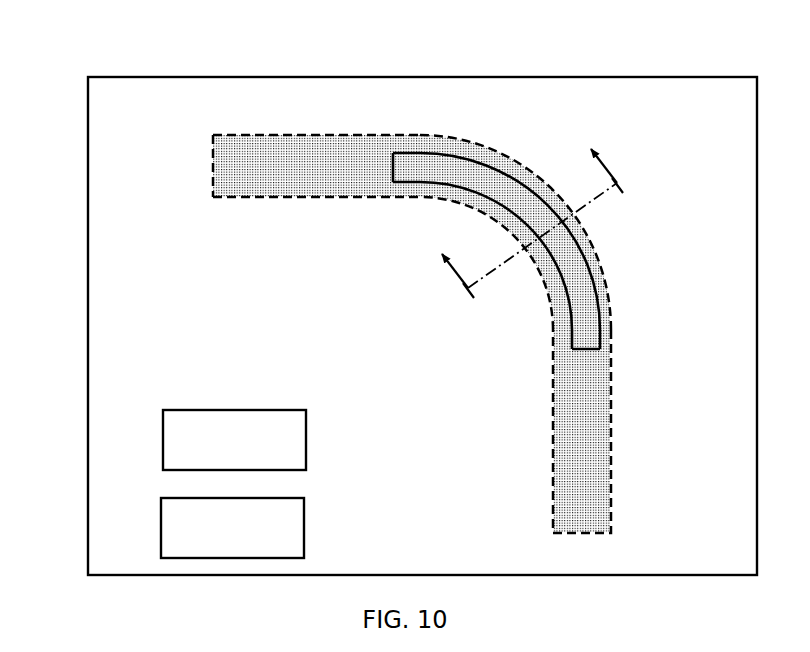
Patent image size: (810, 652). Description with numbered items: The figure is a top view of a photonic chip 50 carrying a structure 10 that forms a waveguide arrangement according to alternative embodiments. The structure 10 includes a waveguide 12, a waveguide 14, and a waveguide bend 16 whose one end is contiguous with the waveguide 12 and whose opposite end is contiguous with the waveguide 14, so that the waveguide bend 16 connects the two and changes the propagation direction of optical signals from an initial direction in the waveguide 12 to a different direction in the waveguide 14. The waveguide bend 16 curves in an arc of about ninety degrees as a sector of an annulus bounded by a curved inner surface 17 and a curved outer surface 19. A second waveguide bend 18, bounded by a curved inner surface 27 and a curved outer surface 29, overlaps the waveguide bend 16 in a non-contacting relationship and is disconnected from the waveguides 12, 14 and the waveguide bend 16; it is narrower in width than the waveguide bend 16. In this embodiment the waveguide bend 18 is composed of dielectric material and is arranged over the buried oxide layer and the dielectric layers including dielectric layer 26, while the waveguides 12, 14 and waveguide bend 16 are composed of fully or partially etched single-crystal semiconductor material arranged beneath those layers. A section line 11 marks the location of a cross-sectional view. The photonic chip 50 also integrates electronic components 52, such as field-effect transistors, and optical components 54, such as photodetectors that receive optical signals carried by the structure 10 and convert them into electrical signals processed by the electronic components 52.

The photonic chip 50 is at (85, 52).
The dielectric layer 26 is at (128, 565).
The structure 10 is at (643, 173).
The waveguide 12 is at (245, 182).
The waveguide 14 is at (582, 469).
The waveguide bend 16 is at (497, 216).
The curved inner surface 17 is at (428, 198).
The curved outer surface 19 is at (497, 162).
The waveguide bend 18 is at (543, 272).
The curved inner surface 27 is at (555, 295).
The curved outer surface 29 is at (530, 198).
The section line 11- 11 is at (520, 201).
The electronic components 52 is at (306, 437).
The optical components 54 is at (304, 530).